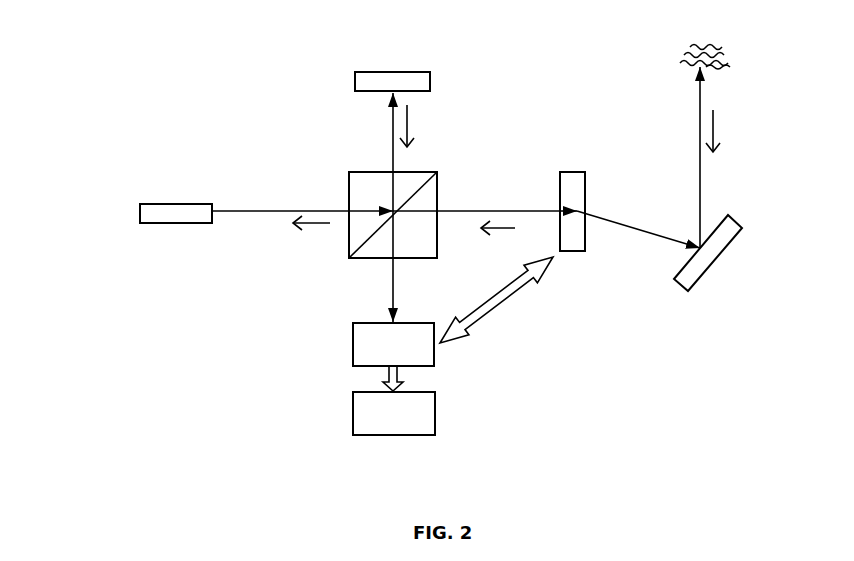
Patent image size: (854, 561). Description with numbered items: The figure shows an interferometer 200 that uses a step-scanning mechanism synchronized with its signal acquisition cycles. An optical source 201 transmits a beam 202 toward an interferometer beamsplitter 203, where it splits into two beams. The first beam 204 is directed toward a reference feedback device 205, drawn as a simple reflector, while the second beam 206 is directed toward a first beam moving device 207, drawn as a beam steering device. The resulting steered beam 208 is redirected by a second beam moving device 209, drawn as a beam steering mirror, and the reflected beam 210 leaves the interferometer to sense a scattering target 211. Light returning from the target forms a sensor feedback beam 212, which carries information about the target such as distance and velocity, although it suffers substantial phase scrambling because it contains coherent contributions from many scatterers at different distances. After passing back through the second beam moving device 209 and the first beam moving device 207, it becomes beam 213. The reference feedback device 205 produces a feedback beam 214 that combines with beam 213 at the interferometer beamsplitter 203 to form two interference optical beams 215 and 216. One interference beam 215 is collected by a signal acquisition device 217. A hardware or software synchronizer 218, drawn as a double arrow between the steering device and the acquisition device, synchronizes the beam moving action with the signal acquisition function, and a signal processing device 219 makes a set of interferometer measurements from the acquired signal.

The interferometer 200 is at (135, 358).
The optical source 201 is at (151, 196).
The beam 202 is at (255, 205).
The interferometer beamsplitter 203 is at (345, 178).
The first beam 204 is at (385, 152).
The reference feedback device 205 is at (352, 81).
The second beam 206 is at (483, 206).
The first beam moving device 207 is at (575, 166).
The steered beam 208 is at (613, 213).
The second beam moving device 209 is at (727, 258).
The reflected beam 210 is at (705, 206).
The scattering target 211 is at (733, 58).
The sensor feedback beam 212 is at (717, 131).
The beam 213 is at (498, 239).
The feedback beam 214 is at (413, 131).
The interference optical beam 215 is at (386, 299).
The interference optical beam 216 is at (294, 233).
The signal acquisition device 217 is at (343, 349).
The synchronizer 218 is at (518, 306).
The signal processing device 219 is at (347, 417).